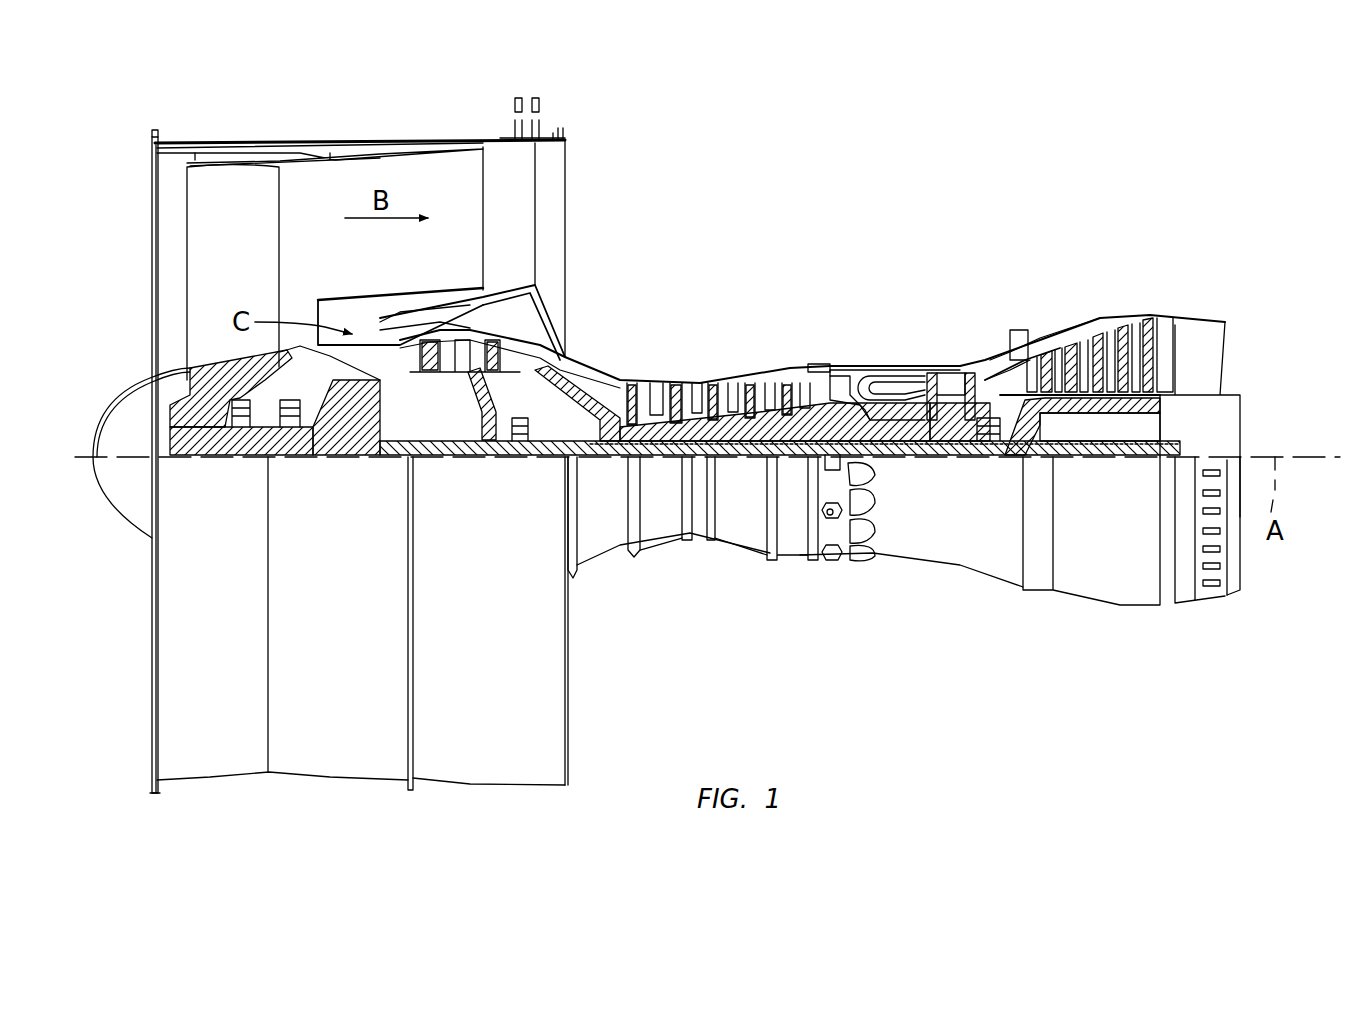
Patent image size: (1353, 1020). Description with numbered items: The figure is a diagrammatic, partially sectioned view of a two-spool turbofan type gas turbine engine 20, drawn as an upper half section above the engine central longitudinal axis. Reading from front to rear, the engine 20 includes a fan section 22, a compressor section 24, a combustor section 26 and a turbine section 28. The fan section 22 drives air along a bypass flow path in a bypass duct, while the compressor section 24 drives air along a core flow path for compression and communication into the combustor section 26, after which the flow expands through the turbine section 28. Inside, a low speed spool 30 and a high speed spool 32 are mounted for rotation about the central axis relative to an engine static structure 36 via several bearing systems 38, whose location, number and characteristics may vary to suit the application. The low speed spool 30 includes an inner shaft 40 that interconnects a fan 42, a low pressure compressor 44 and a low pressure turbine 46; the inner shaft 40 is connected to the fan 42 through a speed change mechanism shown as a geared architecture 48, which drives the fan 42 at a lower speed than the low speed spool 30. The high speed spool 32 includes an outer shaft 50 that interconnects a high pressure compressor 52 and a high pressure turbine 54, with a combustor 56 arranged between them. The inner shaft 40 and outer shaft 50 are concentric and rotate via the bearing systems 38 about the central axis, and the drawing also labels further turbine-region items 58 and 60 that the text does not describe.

The gas turbine engine 20 is at (930, 150).
The fan section 22 is at (392, 112).
The compressor section 24 is at (865, 264).
The combustor section 26 is at (980, 264).
The turbine section 28 is at (1178, 264).
The low speed spool 30 is at (745, 462).
The high speed spool 32 is at (800, 366).
The engine static structure 36 is at (793, 560).
The bearing systems 38 is at (240, 458).
The inner shaft 40 is at (596, 462).
The fan 42 is at (254, 257).
The low pressure compressor 44 is at (490, 340).
The low pressure turbine 46 is at (1097, 318).
The geared architecture 48 is at (365, 458).
The outer shaft 50 is at (888, 455).
The high pressure compressor 52 is at (713, 415).
The high pressure turbine 54 is at (952, 366).
The combustor 56 is at (880, 395).
The mid-turbine frame 58 is at (1008, 350).
The airfoils 60 is at (998, 380).